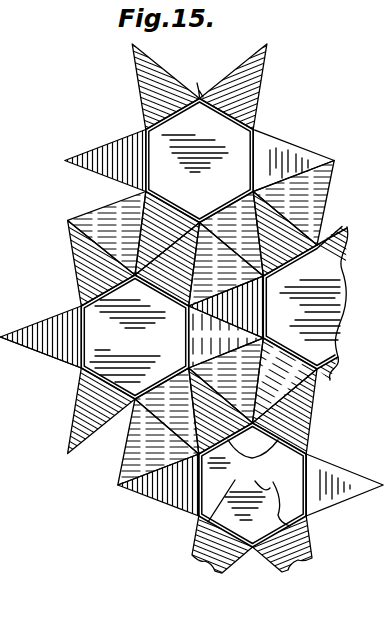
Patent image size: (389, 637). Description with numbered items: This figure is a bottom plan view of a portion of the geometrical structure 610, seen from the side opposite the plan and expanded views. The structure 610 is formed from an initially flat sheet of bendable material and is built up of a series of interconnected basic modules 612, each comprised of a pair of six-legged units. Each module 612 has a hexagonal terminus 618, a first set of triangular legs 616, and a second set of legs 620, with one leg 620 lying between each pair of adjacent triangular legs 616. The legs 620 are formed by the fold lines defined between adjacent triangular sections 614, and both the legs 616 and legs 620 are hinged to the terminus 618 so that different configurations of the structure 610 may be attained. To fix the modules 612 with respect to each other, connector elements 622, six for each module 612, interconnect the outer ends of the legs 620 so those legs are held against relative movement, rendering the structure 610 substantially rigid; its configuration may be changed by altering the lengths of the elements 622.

The geometrical structure 610 is at (290, 112).
The basic module 612 is at (46, 373).
The triangular section 614 is at (173, 218).
The triangular leg 616 is at (137, 72).
The hexagonal terminus 618 is at (160, 137).
The leg 620 is at (308, 518).
The connector element 622 is at (118, 193).